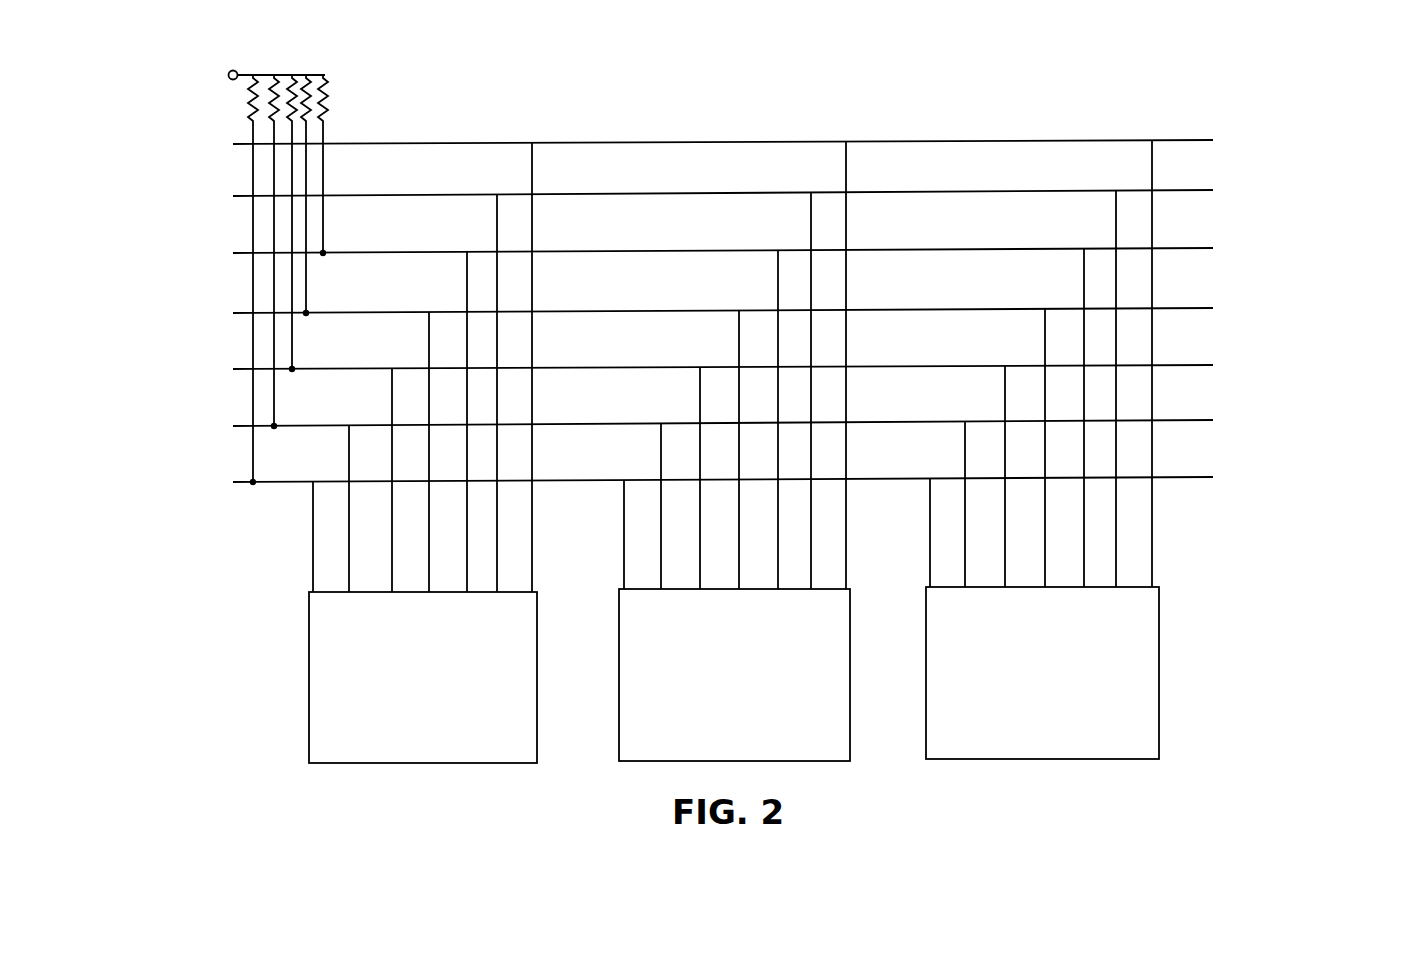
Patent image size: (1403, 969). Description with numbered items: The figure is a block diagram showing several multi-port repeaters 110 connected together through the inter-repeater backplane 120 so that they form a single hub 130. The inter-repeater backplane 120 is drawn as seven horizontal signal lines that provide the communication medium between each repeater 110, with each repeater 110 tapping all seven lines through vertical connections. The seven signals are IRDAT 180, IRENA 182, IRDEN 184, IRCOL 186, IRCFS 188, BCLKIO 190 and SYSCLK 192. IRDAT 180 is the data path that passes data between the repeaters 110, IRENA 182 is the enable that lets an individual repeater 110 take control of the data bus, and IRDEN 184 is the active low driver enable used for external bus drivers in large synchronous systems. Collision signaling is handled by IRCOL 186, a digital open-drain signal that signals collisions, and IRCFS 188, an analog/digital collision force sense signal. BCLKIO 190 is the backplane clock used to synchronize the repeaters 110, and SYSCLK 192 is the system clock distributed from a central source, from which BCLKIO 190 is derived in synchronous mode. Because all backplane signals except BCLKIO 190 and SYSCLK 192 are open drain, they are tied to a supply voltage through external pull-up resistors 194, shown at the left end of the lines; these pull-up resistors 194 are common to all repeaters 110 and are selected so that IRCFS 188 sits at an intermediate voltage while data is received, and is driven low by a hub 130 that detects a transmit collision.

The multi-port repeater 110 is at (467, 763).
The inter-repeater backplane 120 is at (190, 373).
The hub 130 is at (480, 115).
The pull-up resistor 194 is at (283, 82).
The SYSCLK 192 is at (1318, 122).
The BCLKIO 190 is at (1318, 173).
The IRDAT 180 is at (1303, 243).
The IRCOL 186 is at (1303, 302).
The IRCFS 188 is at (1303, 358).
The IRDEN 184 is at (1303, 415).
The IRENA 182 is at (1303, 472).